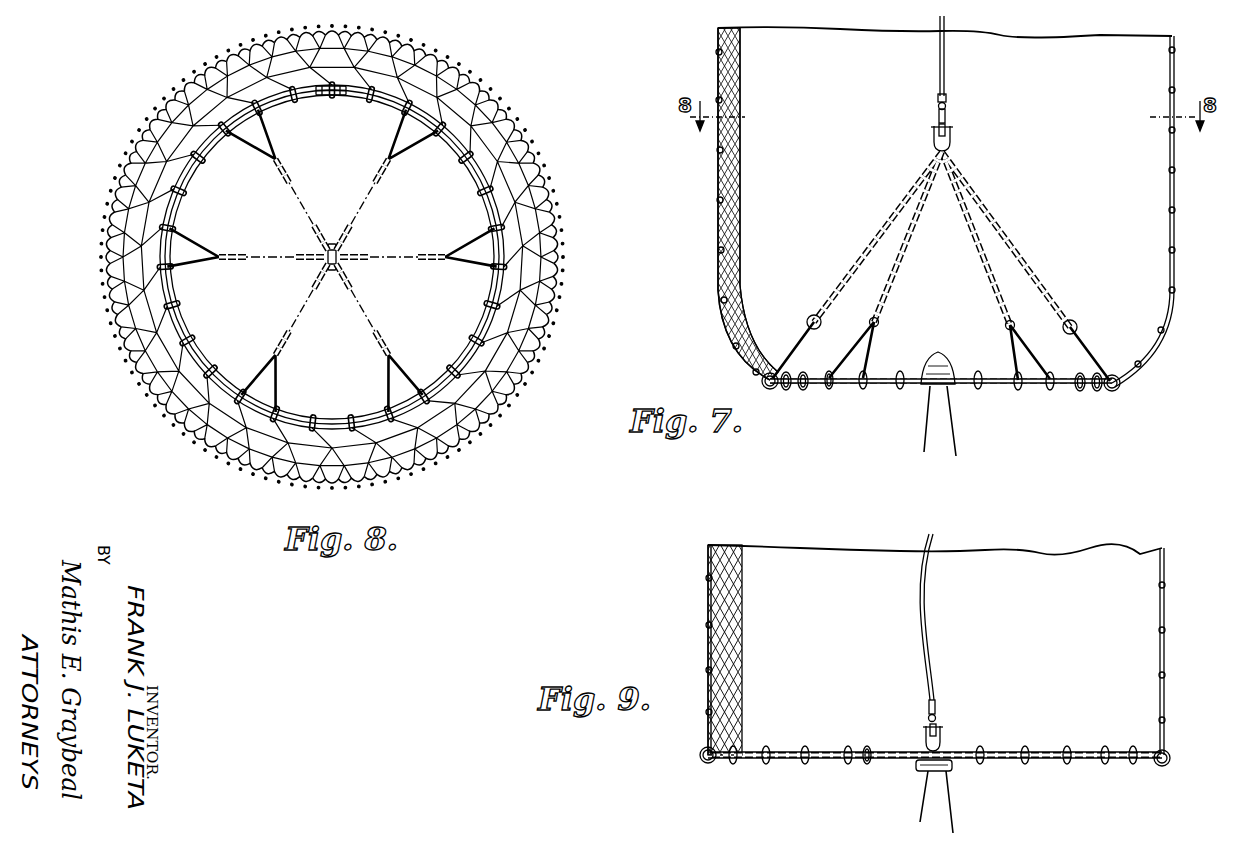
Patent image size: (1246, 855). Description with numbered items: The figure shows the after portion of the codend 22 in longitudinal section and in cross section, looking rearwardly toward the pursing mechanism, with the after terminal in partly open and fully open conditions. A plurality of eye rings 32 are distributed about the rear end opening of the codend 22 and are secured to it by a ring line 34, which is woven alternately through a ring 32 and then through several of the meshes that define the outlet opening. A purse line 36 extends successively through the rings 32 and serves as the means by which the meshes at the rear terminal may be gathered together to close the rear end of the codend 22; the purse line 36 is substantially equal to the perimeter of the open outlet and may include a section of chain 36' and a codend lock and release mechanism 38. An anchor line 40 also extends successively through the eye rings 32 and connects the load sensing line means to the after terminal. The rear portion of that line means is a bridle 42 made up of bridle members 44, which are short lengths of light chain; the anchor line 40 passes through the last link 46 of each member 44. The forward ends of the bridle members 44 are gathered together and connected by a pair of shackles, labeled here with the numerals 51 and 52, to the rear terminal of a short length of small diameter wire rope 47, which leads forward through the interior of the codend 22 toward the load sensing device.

In FIG. 7, the codend 22 is at (1175, 224).
In FIG. 8, the codend 22 is at (572, 265).
In FIG. 9, the codend 22 is at (1166, 643).
In FIG. 7, the eye rings 32 is at (780, 389).
In FIG. 9, the eye rings 32 is at (706, 763).
In FIG. 8, the ring line 34 is at (168, 289).
In FIG. 7, the purse line 36 is at (960, 408).
In FIG. 8, the purse line 36 is at (334, 249).
In FIG. 9, the purse line 36 is at (933, 787).
In FIG. 7, the section of chain 36' is at (853, 398).
In FIG. 9, the section of chain 36' is at (854, 774).
In FIG. 7, the codend lock and release mechanism 38 is at (955, 394).
In FIG. 8, the codend lock and release mechanism 38 is at (329, 97).
In FIG. 9, the codend lock and release mechanism 38 is at (952, 771).
In FIG. 7, the anchor line 40 is at (871, 353).
In FIG. 8, the anchor line 40 is at (200, 141).
In FIG. 7, the bridle 42 is at (880, 206).
In FIG. 7, the bridle members 44 is at (862, 241).
In FIG. 8, the bridle members 44 is at (300, 250).
In FIG. 9, the bridle members 44 is at (826, 750).
In FIG. 7, the last link 46 is at (811, 318).
In FIG. 7, the wire rope 47 is at (946, 80).
In FIG. 9, the wire rope 47 is at (927, 586).
In FIG. 7, the shackle 51 is at (952, 133).
In FIG. 9, the shackle 51 is at (930, 745).
In FIG. 7, the small diameter line 52 is at (938, 120).
In FIG. 9, the small diameter line 52 is at (946, 740).